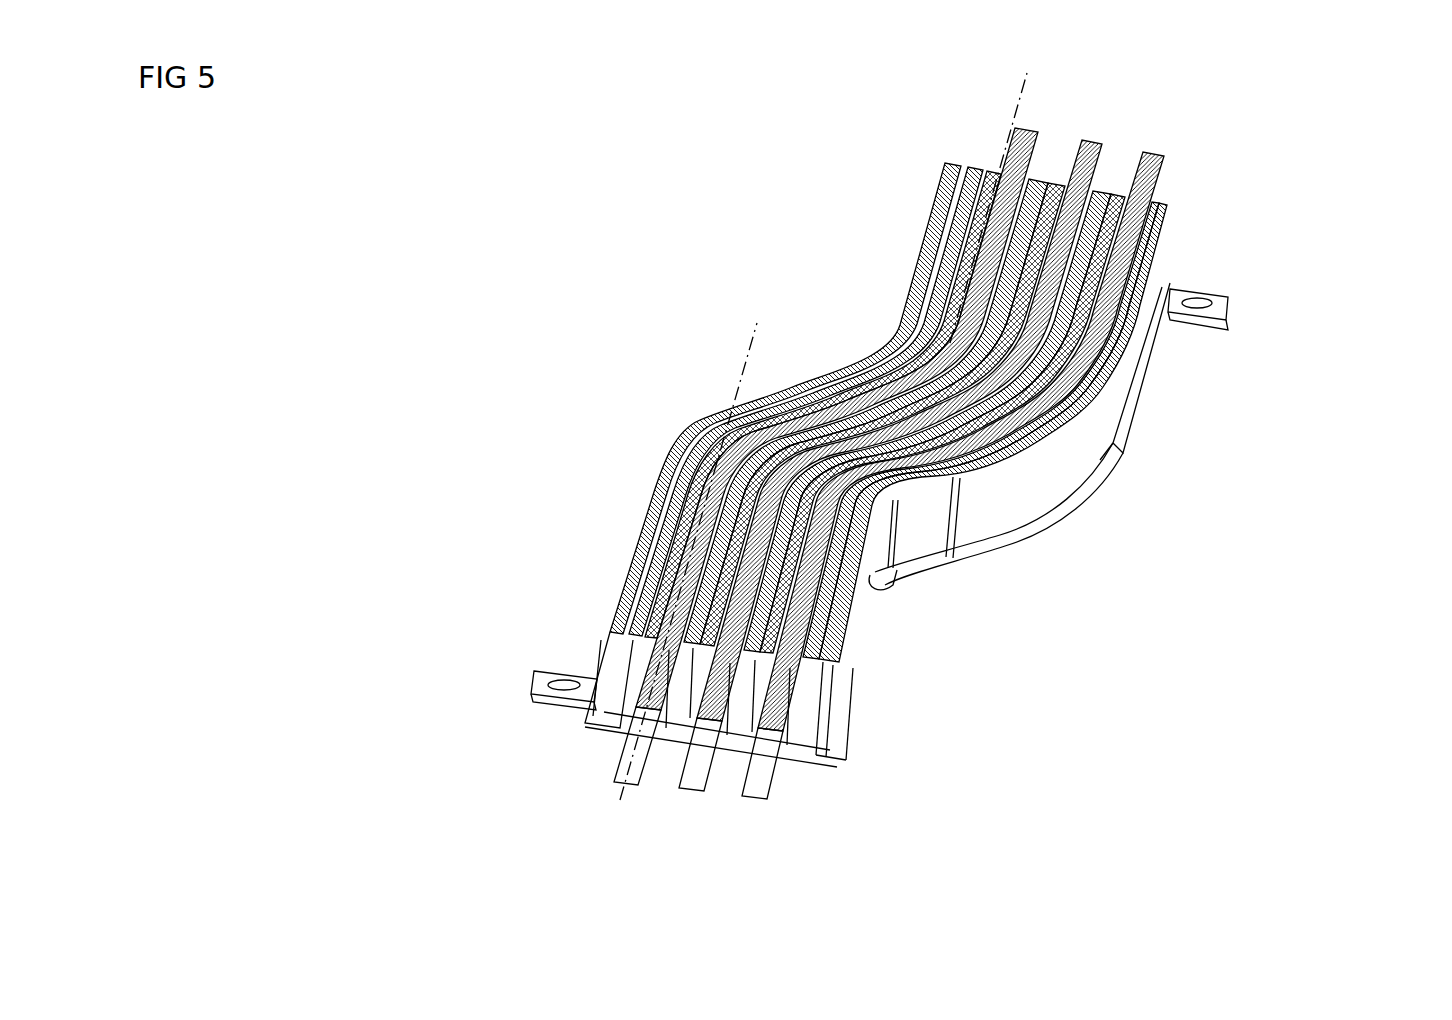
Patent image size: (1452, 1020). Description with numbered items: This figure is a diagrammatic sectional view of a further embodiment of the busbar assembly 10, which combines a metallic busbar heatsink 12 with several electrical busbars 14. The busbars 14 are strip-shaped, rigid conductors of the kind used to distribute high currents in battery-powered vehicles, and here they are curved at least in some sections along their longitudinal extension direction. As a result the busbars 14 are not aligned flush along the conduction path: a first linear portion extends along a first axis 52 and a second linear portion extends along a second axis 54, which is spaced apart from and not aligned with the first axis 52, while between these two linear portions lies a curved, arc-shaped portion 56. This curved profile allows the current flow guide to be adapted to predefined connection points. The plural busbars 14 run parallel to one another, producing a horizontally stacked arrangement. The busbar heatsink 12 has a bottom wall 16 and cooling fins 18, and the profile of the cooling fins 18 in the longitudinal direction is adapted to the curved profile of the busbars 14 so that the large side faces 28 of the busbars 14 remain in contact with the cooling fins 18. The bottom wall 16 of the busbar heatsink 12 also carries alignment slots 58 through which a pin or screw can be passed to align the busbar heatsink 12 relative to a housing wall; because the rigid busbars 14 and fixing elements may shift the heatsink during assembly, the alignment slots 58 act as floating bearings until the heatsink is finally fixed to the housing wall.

The busbar assembly 10 is at (1322, 202).
The busbar heatsink 12 is at (820, 555).
The electrical busbar 14 is at (1010, 136).
The bottom wall 16 is at (662, 745).
The cooling fins 18 is at (705, 605).
The side faces 28 is at (640, 718).
The first axis 52 is at (746, 356).
The second axis 54 is at (1023, 97).
The curved, arc-shaped portion 56 is at (835, 412).
The alignment slots 58 is at (555, 692).